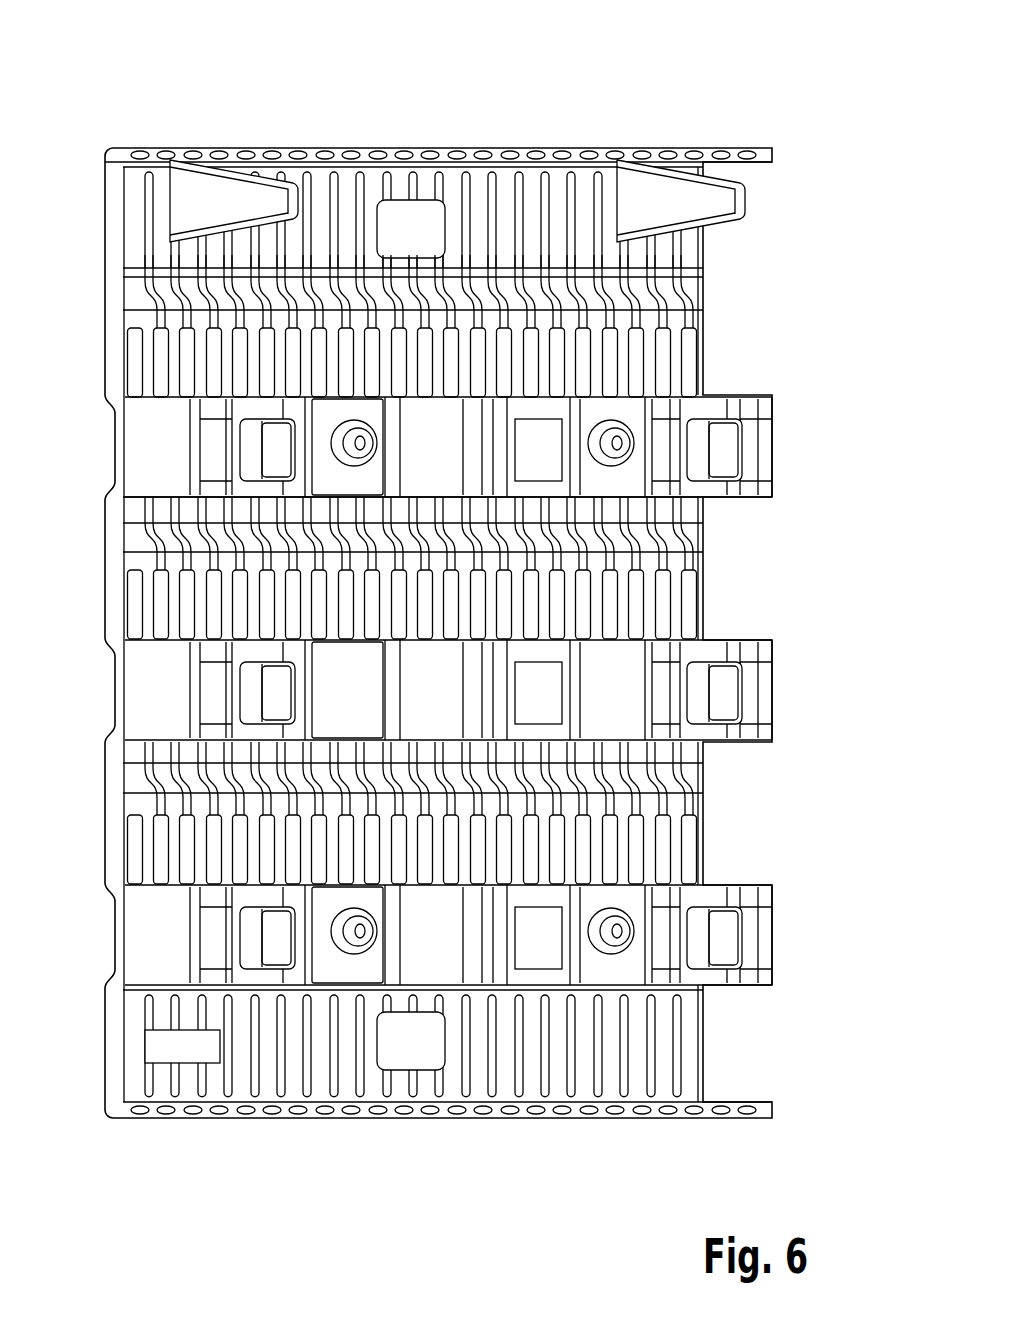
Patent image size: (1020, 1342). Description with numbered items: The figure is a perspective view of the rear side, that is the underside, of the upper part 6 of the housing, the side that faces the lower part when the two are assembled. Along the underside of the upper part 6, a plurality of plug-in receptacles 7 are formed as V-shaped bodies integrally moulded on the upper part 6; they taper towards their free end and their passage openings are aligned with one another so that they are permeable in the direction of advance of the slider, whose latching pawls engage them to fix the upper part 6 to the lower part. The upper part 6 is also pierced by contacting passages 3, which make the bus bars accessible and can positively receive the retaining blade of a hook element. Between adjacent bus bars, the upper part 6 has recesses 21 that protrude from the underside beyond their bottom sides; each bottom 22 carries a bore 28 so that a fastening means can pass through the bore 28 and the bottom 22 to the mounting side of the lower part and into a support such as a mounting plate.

The upper part 6 is at (757, 93).
The contacting passages 3 is at (152, 302).
The plug-in receptacles 7 is at (205, 200).
The recess 21 is at (215, 403).
The bottom 22 is at (327, 417).
The bore 28 is at (363, 442).